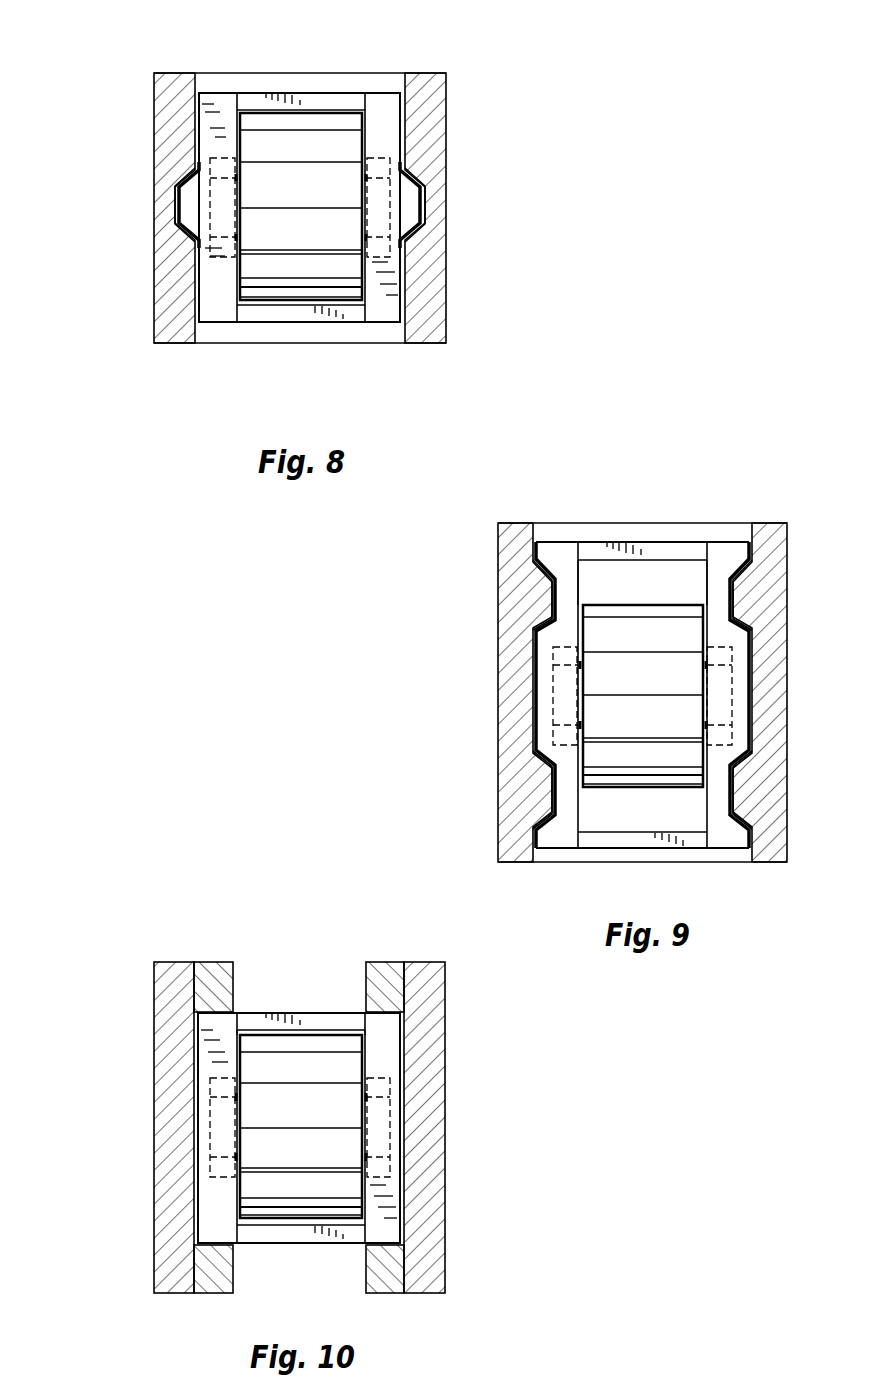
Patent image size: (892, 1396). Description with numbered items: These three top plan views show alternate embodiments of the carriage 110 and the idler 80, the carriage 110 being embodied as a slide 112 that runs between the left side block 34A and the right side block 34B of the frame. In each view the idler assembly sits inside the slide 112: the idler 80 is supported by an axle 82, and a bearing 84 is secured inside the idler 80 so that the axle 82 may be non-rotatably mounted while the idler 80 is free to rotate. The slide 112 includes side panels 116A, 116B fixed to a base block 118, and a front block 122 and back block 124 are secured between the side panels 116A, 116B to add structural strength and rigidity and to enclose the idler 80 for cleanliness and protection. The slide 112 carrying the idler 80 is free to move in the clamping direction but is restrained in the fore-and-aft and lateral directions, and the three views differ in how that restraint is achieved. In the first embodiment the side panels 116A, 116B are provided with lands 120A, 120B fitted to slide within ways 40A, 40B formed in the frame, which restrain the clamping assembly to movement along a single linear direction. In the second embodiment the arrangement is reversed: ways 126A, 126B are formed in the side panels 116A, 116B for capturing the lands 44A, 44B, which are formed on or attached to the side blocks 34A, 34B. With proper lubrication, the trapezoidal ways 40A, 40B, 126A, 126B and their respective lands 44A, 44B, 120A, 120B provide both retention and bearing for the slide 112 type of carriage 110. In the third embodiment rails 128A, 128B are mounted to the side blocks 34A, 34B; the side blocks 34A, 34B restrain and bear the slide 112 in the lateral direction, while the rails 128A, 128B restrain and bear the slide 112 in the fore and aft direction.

In FIG. 8, the left side block 34A is at (433, 318).
In FIG. 9, the left side block 34A is at (763, 748).
In FIG. 10, the left side block 34A is at (429, 1203).
In FIG. 8, the right side block 34B is at (162, 330).
In FIG. 9, the right side block 34B is at (520, 548).
In FIG. 10, the right side block 34B is at (163, 1268).
In FIG. 8, the way 40A is at (427, 228).
In FIG. 8, the way 40B is at (185, 229).
In FIG. 9, the land 44A is at (740, 583).
In FIG. 9, the land 44B is at (548, 598).
In FIG. 8, the idler 80 is at (313, 270).
In FIG. 9, the idler 80 is at (675, 633).
In FIG. 10, the idler 80 is at (268, 1188).
In FIG. 8, the axle 82 is at (373, 192).
In FIG. 9, the axle 82 is at (722, 705).
In FIG. 10, the axle 82 is at (212, 1123).
In FIG. 8, the bearing 84 is at (200, 246).
In FIG. 9, the bearing 84 is at (557, 740).
In FIG. 10, the bearing 84 is at (218, 1172).
In FIG. 8, the carriage 110 is at (283, 334).
In FIG. 9, the carriage 110 is at (668, 511).
In FIG. 10, the carriage 110 is at (323, 1250).
In FIG. 8, the slide 112 is at (241, 326).
In FIG. 9, the slide 112 is at (548, 540).
In FIG. 10, the slide 112 is at (291, 1244).
In FIG. 8, the side panel 116A is at (390, 122).
In FIG. 9, the side panel 116A is at (735, 560).
In FIG. 10, the side panel 116A is at (387, 1055).
In FIG. 8, the side panel 116B is at (219, 296).
In FIG. 9, the side panel 116B is at (565, 540).
In FIG. 10, the side panel 116B is at (207, 1066).
In FIG. 9, the base block 118 is at (683, 575).
In FIG. 10, the base block 118 is at (330, 1032).
In FIG. 8, the land 120A is at (413, 210).
In FIG. 8, the land 120B is at (187, 202).
In FIG. 8, the front block 122 is at (307, 318).
In FIG. 9, the front block 122 is at (602, 842).
In FIG. 10, the front block 122 is at (260, 1233).
In FIG. 8, the back block 124 is at (347, 98).
In FIG. 9, the back block 124 is at (615, 538).
In FIG. 10, the back block 124 is at (268, 1013).
In FIG. 9, the way 126A is at (740, 608).
In FIG. 9, the way 126B is at (550, 620).
In FIG. 10, the rail 128A is at (383, 972).
In FIG. 10, the rail 128B is at (213, 972).